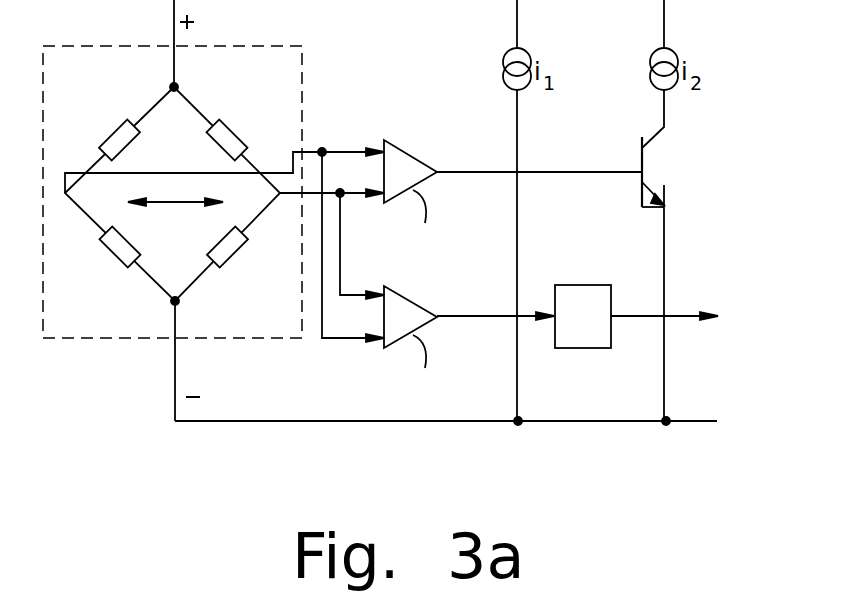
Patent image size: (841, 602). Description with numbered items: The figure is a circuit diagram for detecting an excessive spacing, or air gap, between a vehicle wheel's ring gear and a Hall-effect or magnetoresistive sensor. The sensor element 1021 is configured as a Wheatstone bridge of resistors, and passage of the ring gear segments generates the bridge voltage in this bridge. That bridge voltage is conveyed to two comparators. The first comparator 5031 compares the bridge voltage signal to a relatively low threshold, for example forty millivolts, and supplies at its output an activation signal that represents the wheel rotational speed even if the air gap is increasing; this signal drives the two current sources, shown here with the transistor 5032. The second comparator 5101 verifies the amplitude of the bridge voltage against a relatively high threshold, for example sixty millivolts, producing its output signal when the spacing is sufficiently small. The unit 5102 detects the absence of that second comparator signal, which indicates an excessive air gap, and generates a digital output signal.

The sensor element 1021 is at (302, 68).
The comparator 5031 is at (412, 155).
The transistor 5032 is at (638, 163).
The comparator 5101 is at (412, 300).
The unit 5102 is at (585, 302).